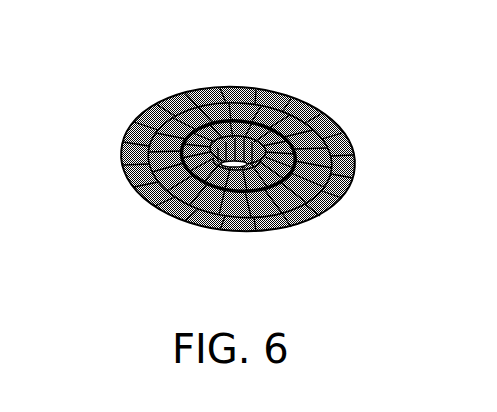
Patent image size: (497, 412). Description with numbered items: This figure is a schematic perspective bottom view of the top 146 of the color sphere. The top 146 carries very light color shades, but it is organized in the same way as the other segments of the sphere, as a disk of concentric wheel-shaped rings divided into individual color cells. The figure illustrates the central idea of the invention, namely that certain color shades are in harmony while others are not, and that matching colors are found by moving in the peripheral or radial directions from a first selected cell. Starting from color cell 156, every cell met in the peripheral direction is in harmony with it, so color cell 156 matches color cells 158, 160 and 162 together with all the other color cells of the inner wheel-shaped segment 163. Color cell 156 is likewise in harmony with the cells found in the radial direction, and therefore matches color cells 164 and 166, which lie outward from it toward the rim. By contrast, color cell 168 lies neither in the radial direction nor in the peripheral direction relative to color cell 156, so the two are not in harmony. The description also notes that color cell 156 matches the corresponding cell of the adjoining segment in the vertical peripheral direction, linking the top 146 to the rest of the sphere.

The top 146 is at (321, 93).
The color cell 156 is at (168, 168).
The color cell 158 is at (237, 183).
The color cell 160 is at (258, 180).
The color cell 162 is at (135, 130).
The inner wheel-shaped segment 163 is at (271, 105).
The color cell 164 is at (192, 196).
The color cell 166 is at (198, 210).
The color cell 168 is at (168, 185).